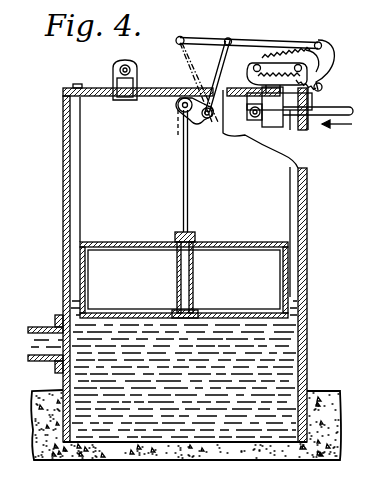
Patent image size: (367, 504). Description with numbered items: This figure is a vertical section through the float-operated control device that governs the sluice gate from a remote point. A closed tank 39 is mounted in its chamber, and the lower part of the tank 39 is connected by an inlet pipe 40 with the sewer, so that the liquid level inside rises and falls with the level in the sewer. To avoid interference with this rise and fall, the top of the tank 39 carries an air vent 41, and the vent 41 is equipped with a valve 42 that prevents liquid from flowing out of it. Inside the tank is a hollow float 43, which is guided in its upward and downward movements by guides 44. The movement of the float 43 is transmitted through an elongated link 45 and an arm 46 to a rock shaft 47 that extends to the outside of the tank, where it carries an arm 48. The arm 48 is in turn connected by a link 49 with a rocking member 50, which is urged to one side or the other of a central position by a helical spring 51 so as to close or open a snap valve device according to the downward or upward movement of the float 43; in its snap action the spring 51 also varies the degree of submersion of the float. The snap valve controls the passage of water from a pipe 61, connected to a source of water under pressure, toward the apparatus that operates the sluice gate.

The closed tank 39 is at (309, 215).
The inlet pipe 40 is at (52, 360).
The air vent 41 is at (130, 62).
The valve 42 is at (115, 70).
The hollow float 43 is at (124, 243).
The guides 44 is at (81, 188).
The link 45 is at (189, 191).
The arm 46 is at (197, 120).
The rock shaft 47 is at (213, 115).
The arm 48 is at (229, 58).
The link 49 is at (240, 38).
The rocking member 50 is at (331, 50).
The helical spring 51 is at (322, 73).
The pipe 61 is at (320, 107).